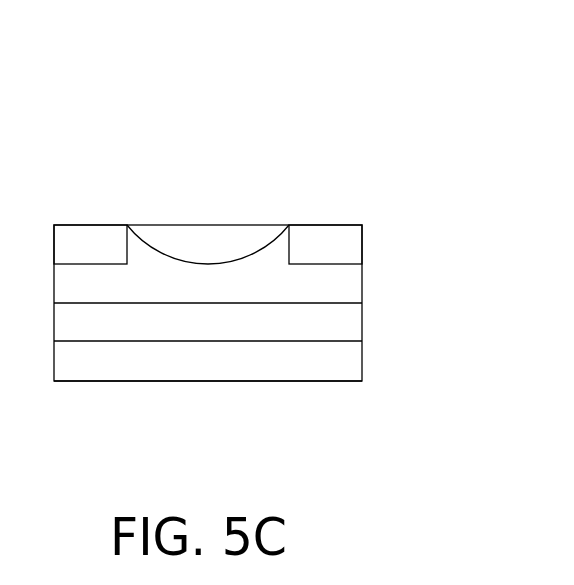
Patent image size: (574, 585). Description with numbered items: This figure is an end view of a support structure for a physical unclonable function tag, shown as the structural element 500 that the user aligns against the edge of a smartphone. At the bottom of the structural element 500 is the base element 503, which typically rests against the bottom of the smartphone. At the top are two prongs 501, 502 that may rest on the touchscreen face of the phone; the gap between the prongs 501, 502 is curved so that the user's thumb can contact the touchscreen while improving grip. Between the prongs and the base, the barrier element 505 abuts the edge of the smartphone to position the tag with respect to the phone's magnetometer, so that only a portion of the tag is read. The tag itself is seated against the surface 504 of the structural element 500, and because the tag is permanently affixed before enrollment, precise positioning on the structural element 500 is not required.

The structural element 500 is at (157, 126).
The prong 501 is at (332, 207).
The prong 502 is at (111, 205).
The base element 503 is at (291, 385).
The surface 504 is at (273, 324).
The barrier element 505 is at (364, 282).